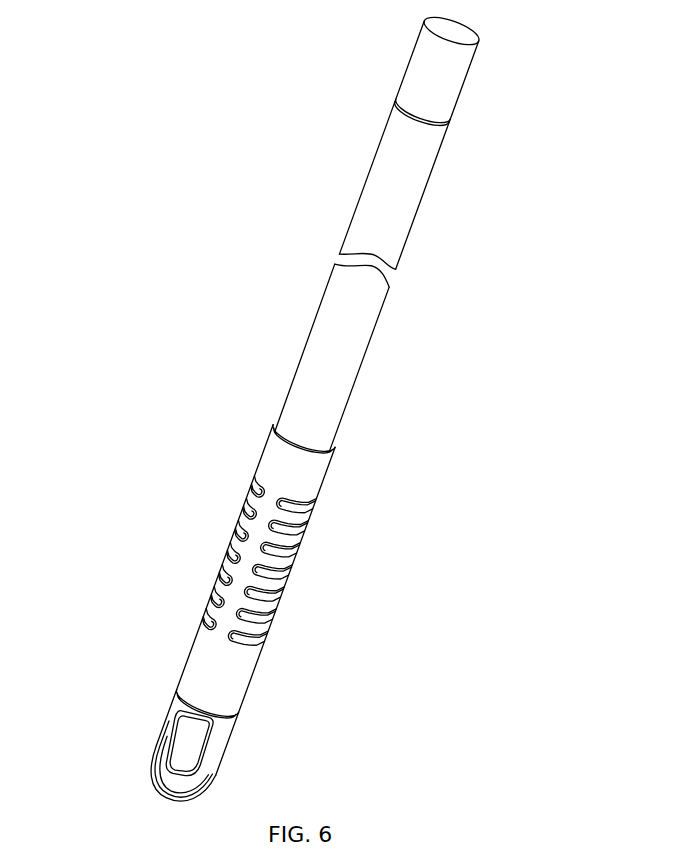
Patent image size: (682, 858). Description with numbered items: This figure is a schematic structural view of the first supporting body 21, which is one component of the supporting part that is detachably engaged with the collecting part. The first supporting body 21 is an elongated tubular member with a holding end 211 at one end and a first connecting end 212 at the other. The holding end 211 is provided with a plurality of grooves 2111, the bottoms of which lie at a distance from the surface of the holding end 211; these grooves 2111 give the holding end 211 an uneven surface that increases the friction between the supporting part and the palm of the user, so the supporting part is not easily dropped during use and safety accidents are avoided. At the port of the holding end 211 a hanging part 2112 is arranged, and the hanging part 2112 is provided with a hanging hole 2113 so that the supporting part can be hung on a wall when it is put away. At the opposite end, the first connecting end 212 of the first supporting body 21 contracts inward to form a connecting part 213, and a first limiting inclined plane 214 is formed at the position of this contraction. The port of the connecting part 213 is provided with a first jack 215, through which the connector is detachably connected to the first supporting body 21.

The first supporting body 21 is at (314, 411).
The holding end 211 is at (234, 618).
The grooves 2111 is at (290, 570).
The hanging part 2112 is at (200, 771).
The hanging hole 2113 is at (193, 745).
The first connecting end 212 is at (468, 90).
The connecting part 213 is at (437, 71).
The first limiting inclined plane 214 is at (400, 101).
The first jack 215 is at (458, 32).